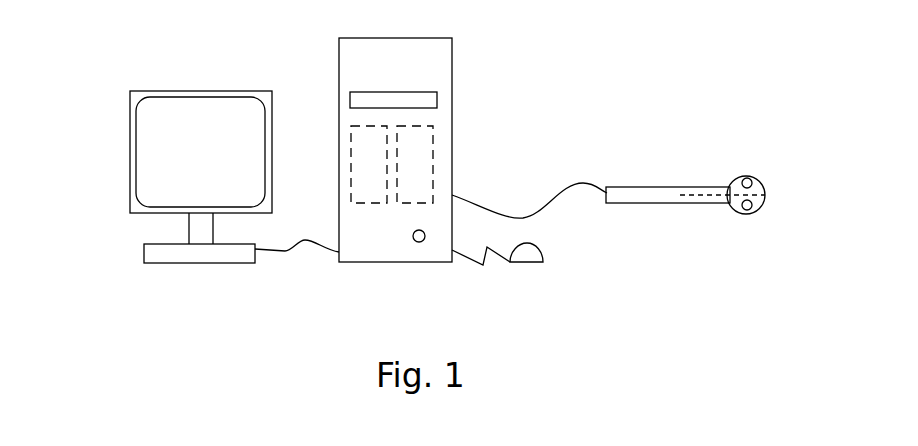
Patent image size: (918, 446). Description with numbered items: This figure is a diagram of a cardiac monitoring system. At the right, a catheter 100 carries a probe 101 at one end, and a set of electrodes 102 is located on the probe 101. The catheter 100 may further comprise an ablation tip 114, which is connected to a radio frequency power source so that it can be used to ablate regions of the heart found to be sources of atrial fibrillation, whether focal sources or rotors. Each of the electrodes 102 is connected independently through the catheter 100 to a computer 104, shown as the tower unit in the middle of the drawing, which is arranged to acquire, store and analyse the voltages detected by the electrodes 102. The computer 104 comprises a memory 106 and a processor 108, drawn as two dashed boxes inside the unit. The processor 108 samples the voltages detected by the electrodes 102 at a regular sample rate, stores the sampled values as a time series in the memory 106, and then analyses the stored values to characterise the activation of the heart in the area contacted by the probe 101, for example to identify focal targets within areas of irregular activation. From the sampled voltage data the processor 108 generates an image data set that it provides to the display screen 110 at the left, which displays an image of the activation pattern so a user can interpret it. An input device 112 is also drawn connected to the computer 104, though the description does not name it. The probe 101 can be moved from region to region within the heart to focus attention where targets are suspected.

The catheter 100 is at (685, 187).
The probe 101 is at (733, 208).
The electrodes 102 is at (747, 178).
The computer 104 is at (452, 72).
The memory 106 is at (351, 143).
The processor 108 is at (433, 142).
The display screen 110 is at (130, 131).
The input device (mouse) 112 is at (538, 250).
The ablation tip 114 is at (703, 193).